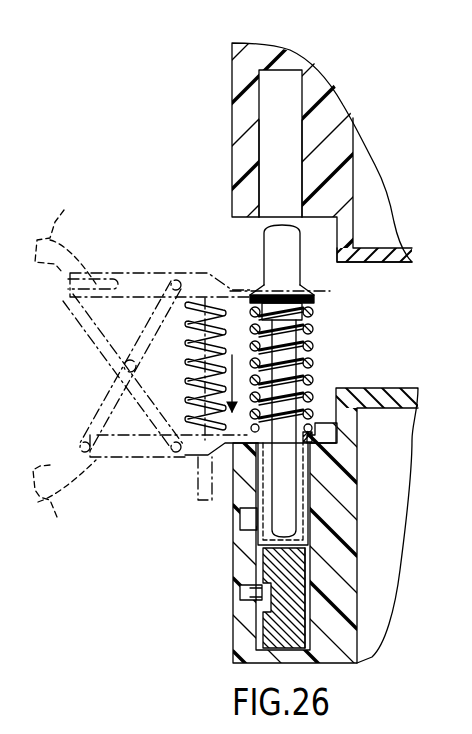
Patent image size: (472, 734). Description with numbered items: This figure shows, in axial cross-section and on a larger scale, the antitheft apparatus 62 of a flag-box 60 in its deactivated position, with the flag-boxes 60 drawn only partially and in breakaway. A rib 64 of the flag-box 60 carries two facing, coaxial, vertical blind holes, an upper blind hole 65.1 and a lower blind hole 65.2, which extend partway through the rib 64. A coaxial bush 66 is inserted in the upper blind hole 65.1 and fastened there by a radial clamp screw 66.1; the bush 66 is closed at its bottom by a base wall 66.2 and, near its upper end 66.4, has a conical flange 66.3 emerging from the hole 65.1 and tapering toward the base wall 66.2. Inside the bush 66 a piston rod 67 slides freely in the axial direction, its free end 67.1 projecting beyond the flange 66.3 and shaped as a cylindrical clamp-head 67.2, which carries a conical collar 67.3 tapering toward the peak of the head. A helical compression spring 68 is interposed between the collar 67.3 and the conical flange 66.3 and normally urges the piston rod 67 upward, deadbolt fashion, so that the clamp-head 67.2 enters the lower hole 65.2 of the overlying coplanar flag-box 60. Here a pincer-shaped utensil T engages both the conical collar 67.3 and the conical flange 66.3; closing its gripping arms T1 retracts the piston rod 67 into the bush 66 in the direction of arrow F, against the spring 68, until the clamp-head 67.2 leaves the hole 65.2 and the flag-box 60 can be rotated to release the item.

The flag-box 60 is at (380, 174).
The antitheft apparatus 62 is at (189, 207).
The rib 64 is at (236, 79).
The upper blind hole 65.1 is at (255, 542).
The lower blind hole 65.2 is at (270, 154).
The bush 66 is at (290, 561).
The radial clamp screw 66.1 is at (242, 593).
The base wall 66.2 is at (306, 559).
The conical flange 66.3 is at (311, 433).
The upper end 66.4 is at (319, 413).
The piston rod 67 is at (283, 485).
The free end 67.1 is at (326, 272).
The cylindrical clamp-head 67.2 is at (264, 243).
The conical collar 67.3 is at (318, 291).
The helical compression spring 68 is at (316, 333).
The pincer-shaped utensil T is at (104, 363).
The gripping arms T1 is at (64, 368).
The arrow F is at (233, 371).